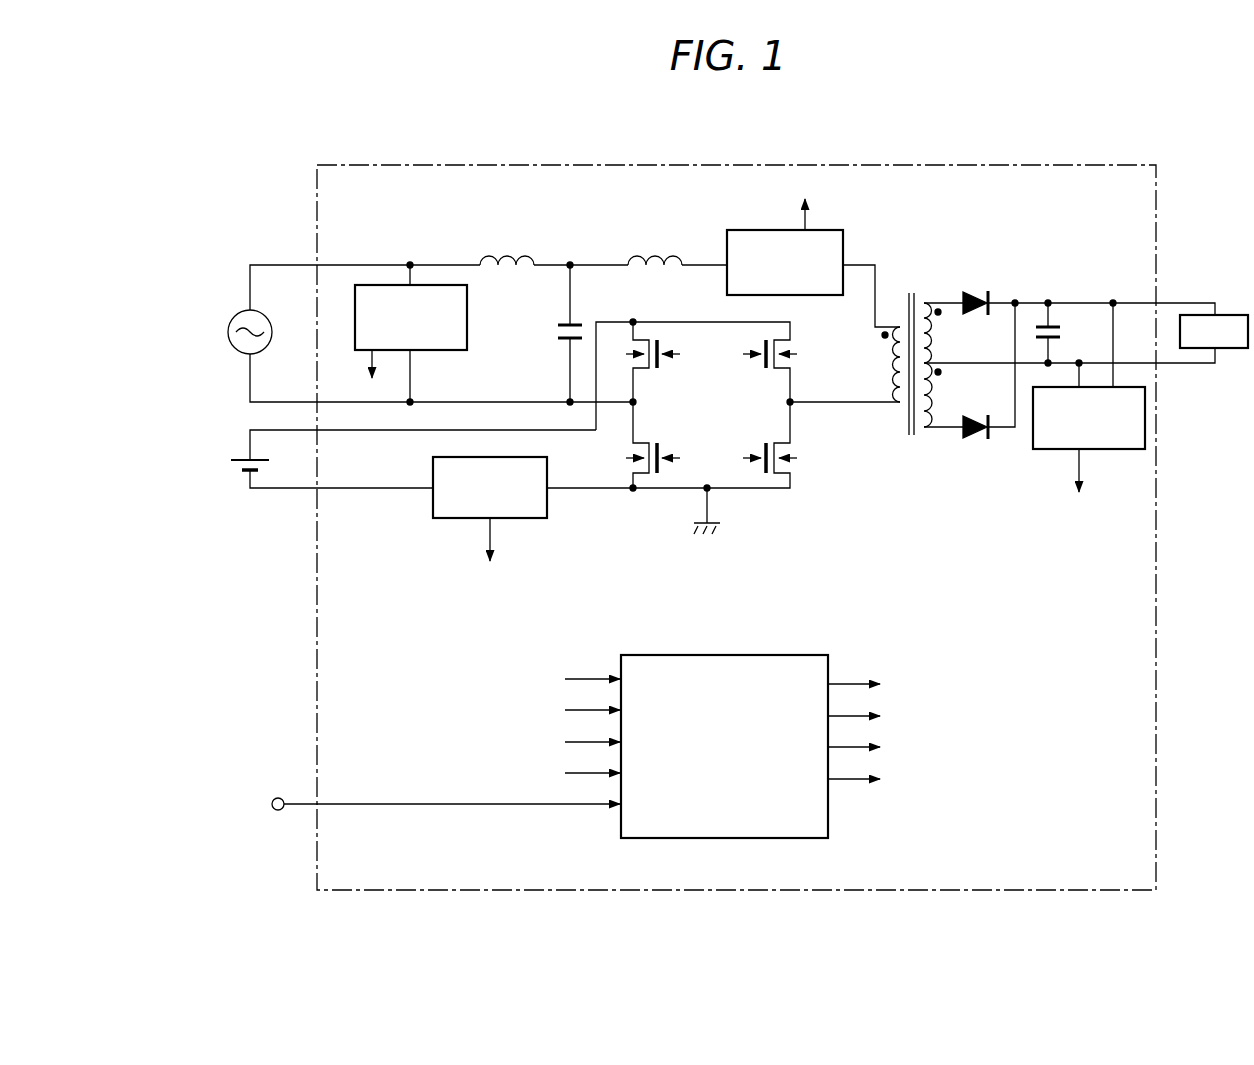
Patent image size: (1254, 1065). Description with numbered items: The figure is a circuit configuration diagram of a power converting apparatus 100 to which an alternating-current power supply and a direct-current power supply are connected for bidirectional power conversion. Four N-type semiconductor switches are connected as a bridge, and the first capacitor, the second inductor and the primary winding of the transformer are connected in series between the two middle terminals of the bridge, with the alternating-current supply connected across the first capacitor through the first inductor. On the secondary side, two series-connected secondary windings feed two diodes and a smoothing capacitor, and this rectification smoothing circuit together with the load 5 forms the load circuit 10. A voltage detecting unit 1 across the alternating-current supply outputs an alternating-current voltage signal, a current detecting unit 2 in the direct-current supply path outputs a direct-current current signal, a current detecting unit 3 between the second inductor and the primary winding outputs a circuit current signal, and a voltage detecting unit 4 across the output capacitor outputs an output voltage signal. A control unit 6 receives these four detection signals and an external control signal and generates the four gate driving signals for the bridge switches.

The power converting apparatus 100 is at (910, 163).
The voltage detecting unit 1 is at (468, 306).
The current detecting unit 2 is at (531, 520).
The current detecting unit 3 is at (746, 228).
The voltage detecting unit 4 is at (1126, 450).
The load 5 is at (1234, 314).
The control unit 6 is at (749, 655).
The load circuit 10 is at (1064, 270).